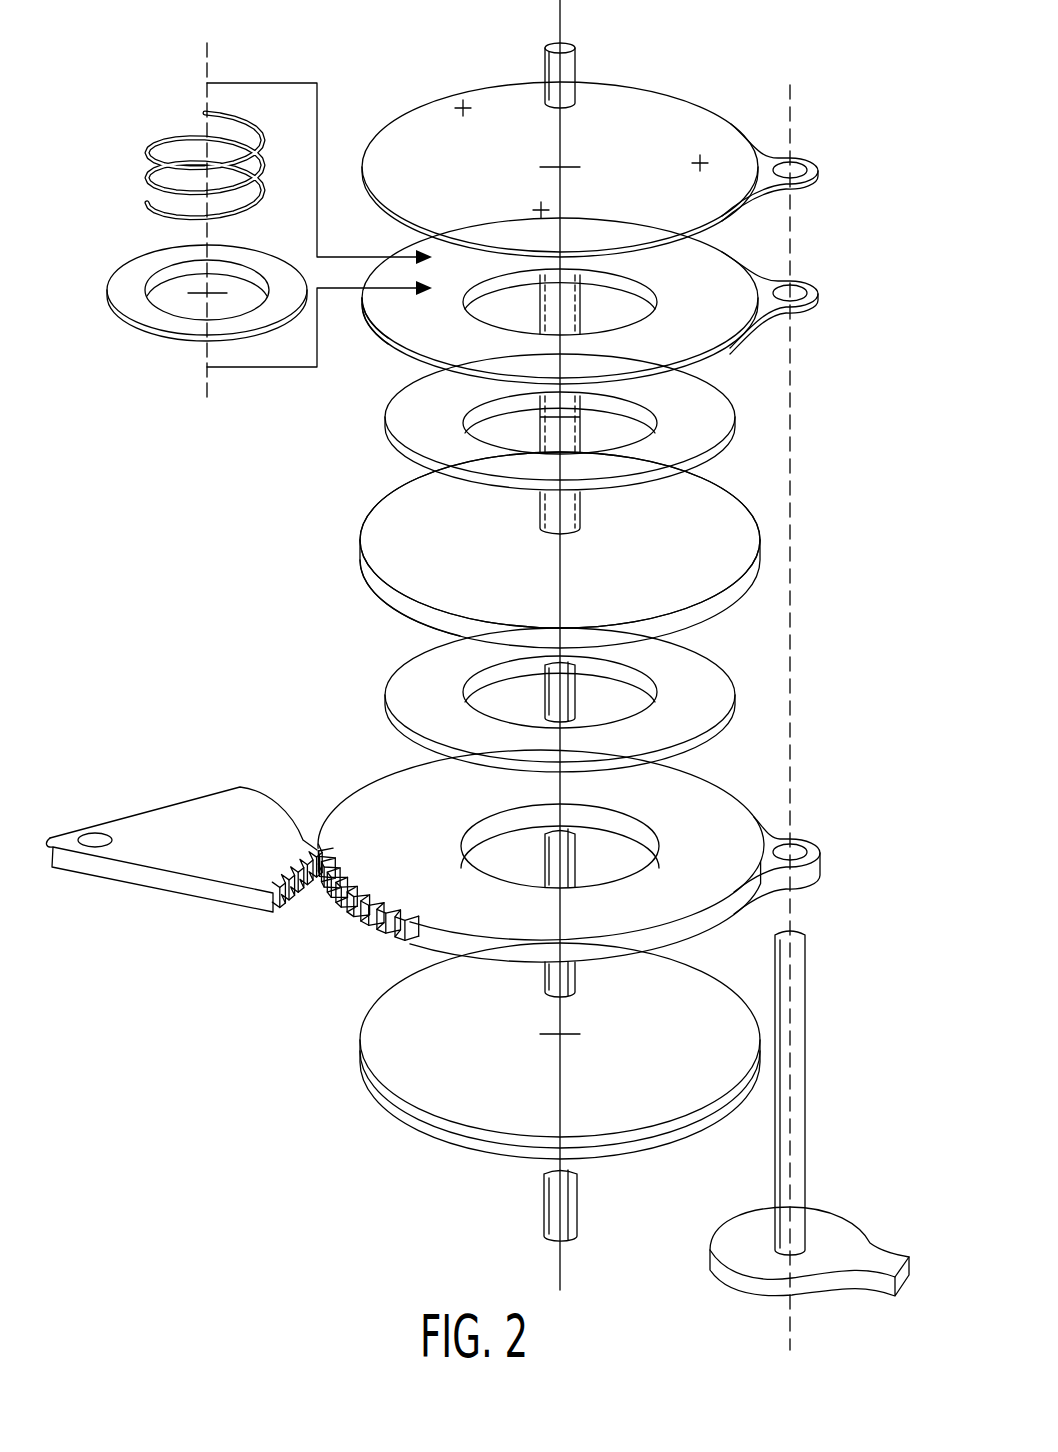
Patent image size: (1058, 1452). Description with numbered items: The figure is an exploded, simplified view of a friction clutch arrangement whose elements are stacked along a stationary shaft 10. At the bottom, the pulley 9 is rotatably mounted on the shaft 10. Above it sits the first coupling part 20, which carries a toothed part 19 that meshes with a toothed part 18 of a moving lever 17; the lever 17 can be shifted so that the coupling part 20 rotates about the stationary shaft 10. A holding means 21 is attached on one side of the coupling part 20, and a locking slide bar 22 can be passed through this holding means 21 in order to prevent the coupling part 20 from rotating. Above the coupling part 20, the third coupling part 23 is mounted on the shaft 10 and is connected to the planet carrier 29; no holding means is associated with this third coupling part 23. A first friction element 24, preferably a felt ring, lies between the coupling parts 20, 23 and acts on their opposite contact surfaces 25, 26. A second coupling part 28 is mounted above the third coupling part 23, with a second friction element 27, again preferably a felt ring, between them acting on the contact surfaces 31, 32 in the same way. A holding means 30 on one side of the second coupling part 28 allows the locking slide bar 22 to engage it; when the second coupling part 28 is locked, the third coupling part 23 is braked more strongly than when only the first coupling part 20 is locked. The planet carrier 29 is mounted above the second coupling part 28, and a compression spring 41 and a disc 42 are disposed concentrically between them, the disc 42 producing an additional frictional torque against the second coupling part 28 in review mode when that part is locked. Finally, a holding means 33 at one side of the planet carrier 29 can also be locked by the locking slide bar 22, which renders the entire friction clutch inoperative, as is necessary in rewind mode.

The pulley 9 is at (385, 1100).
The stationary shaft 10 is at (541, 1209).
The moving lever 17 is at (177, 848).
The toothed part 18 is at (318, 850).
The toothed part 19 is at (331, 836).
The first coupling part 20 is at (360, 930).
The holding means 21 is at (822, 874).
The locking slide bar 22 is at (830, 1228).
The third coupling part 23 is at (383, 582).
The first friction element 24 is at (417, 737).
The contact surface 25 is at (426, 892).
The contact surface 26 is at (409, 627).
The second friction element 27 is at (390, 455).
The second coupling part 28 is at (375, 335).
The planet carrier 29 is at (373, 210).
The holding means 30 is at (818, 315).
The contact surface 31 is at (458, 577).
The contact surface 32 is at (385, 368).
The holding means 33 is at (818, 192).
The compression spring 41 is at (144, 162).
The disc 42 is at (181, 345).